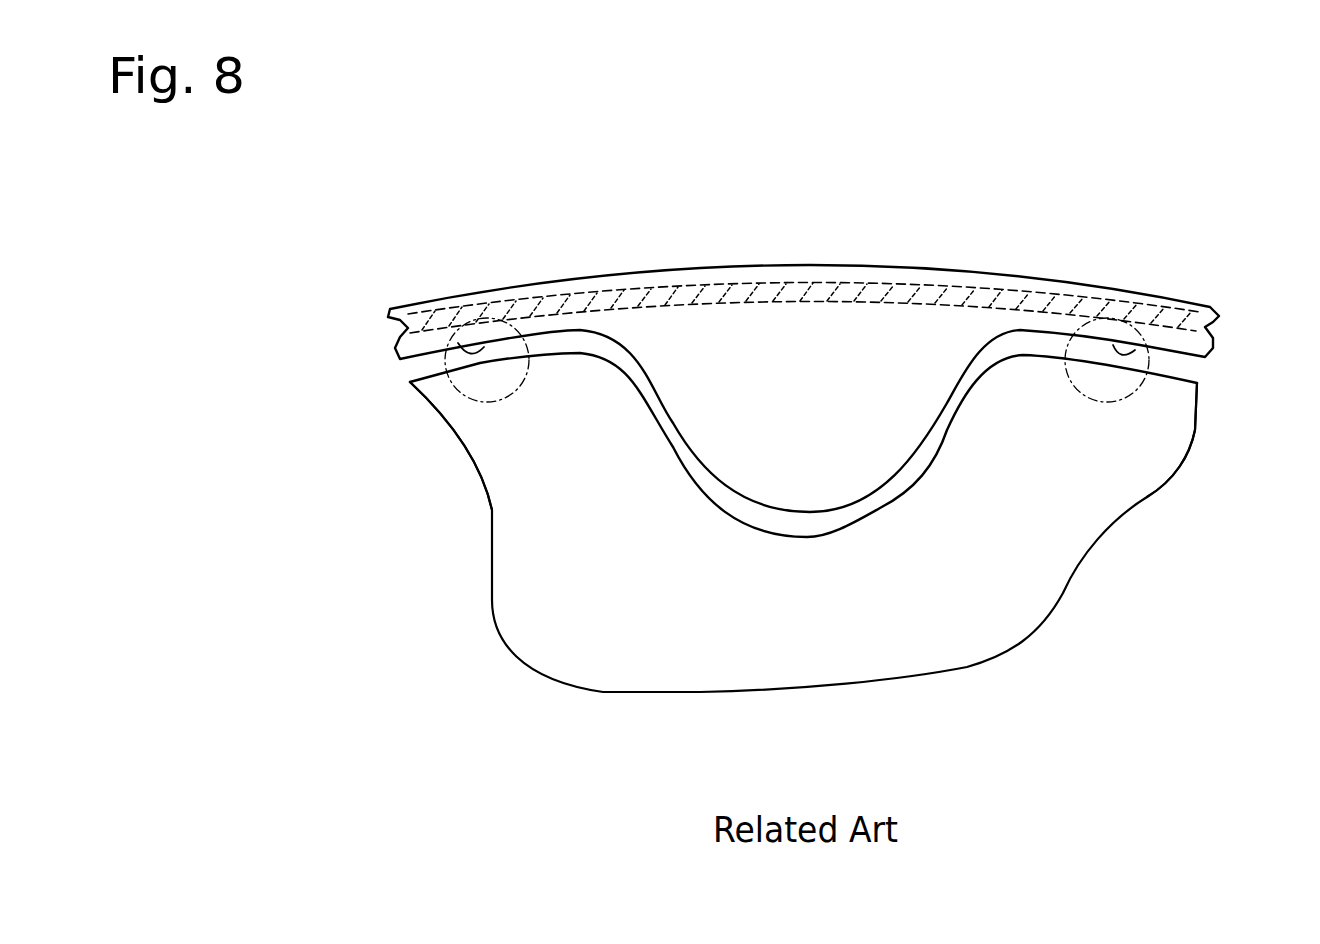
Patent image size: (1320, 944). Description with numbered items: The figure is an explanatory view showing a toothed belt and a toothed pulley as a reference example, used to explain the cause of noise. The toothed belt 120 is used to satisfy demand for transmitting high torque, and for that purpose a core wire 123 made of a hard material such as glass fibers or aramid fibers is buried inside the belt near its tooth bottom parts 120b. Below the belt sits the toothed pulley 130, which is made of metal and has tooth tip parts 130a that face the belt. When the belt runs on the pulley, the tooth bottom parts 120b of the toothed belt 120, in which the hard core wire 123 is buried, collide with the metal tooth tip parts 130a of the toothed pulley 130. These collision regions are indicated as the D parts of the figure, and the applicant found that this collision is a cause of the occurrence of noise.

The toothed belt 120 is at (371, 306).
The tooth bottom parts 120b is at (470, 352).
The core wire 123 is at (855, 287).
The D parts D is at (517, 335).
The toothed pulley 130 is at (462, 667).
The tooth tip parts 130a is at (480, 383).